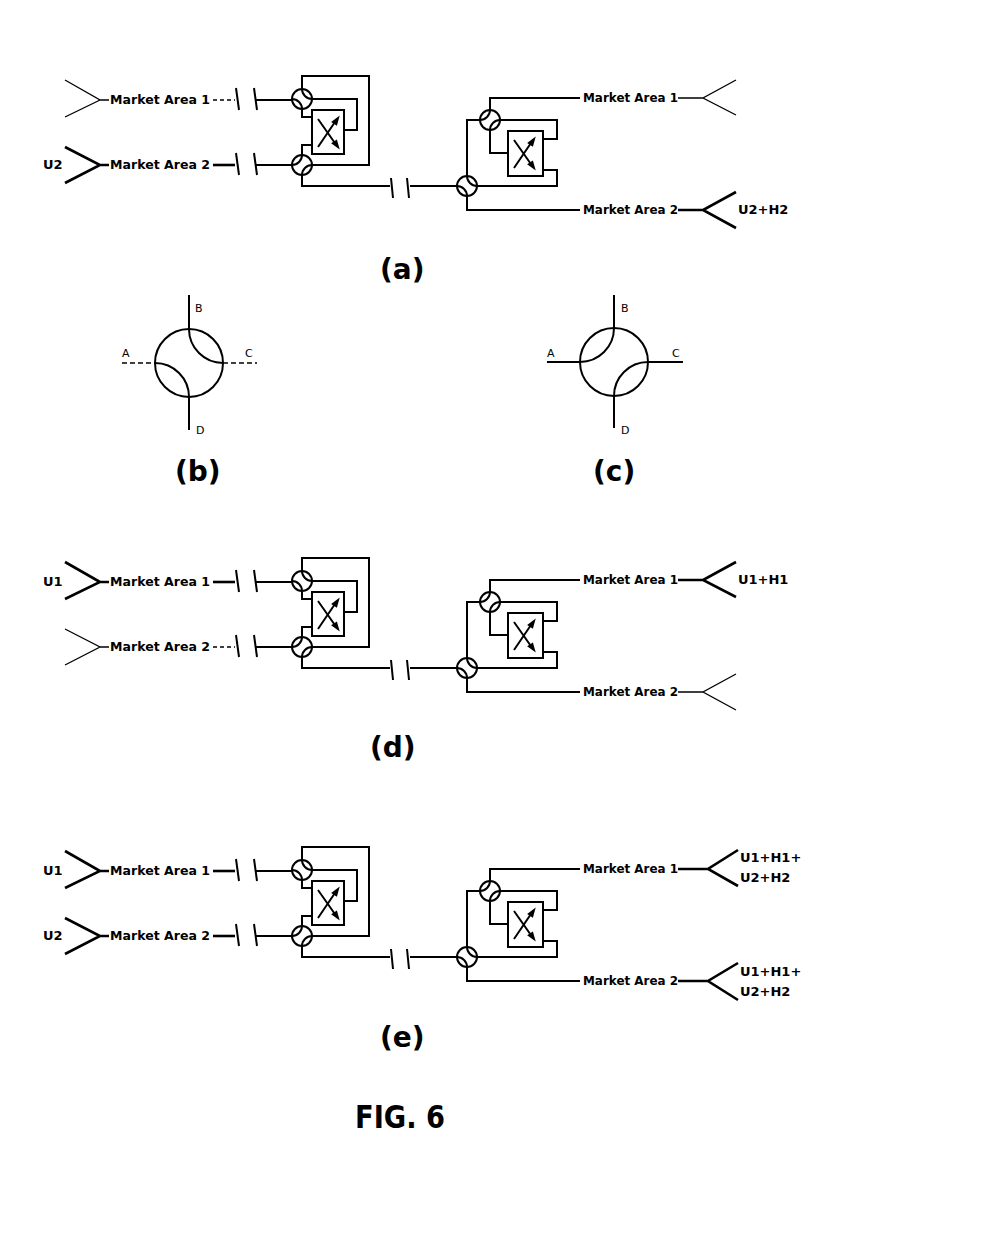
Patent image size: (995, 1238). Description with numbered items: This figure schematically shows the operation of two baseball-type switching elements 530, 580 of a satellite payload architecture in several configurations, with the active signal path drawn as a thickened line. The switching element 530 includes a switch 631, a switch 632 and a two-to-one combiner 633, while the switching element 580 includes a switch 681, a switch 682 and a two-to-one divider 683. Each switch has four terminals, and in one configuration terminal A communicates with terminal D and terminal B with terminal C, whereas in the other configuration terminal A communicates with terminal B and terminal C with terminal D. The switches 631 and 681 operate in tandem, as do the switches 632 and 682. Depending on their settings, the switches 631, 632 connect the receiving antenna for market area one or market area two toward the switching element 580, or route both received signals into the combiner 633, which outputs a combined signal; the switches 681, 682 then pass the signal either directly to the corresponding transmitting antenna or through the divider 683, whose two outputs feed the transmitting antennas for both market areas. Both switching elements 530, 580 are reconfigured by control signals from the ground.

The switching element 530 is at (345, 60).
The switching element 580 is at (478, 68).
The switch 631 is at (295, 92).
The switch 632 is at (295, 172).
The combiner 633 is at (313, 517).
The switch 681 is at (483, 113).
The switch 682 is at (460, 193).
The divider 683 is at (541, 539).